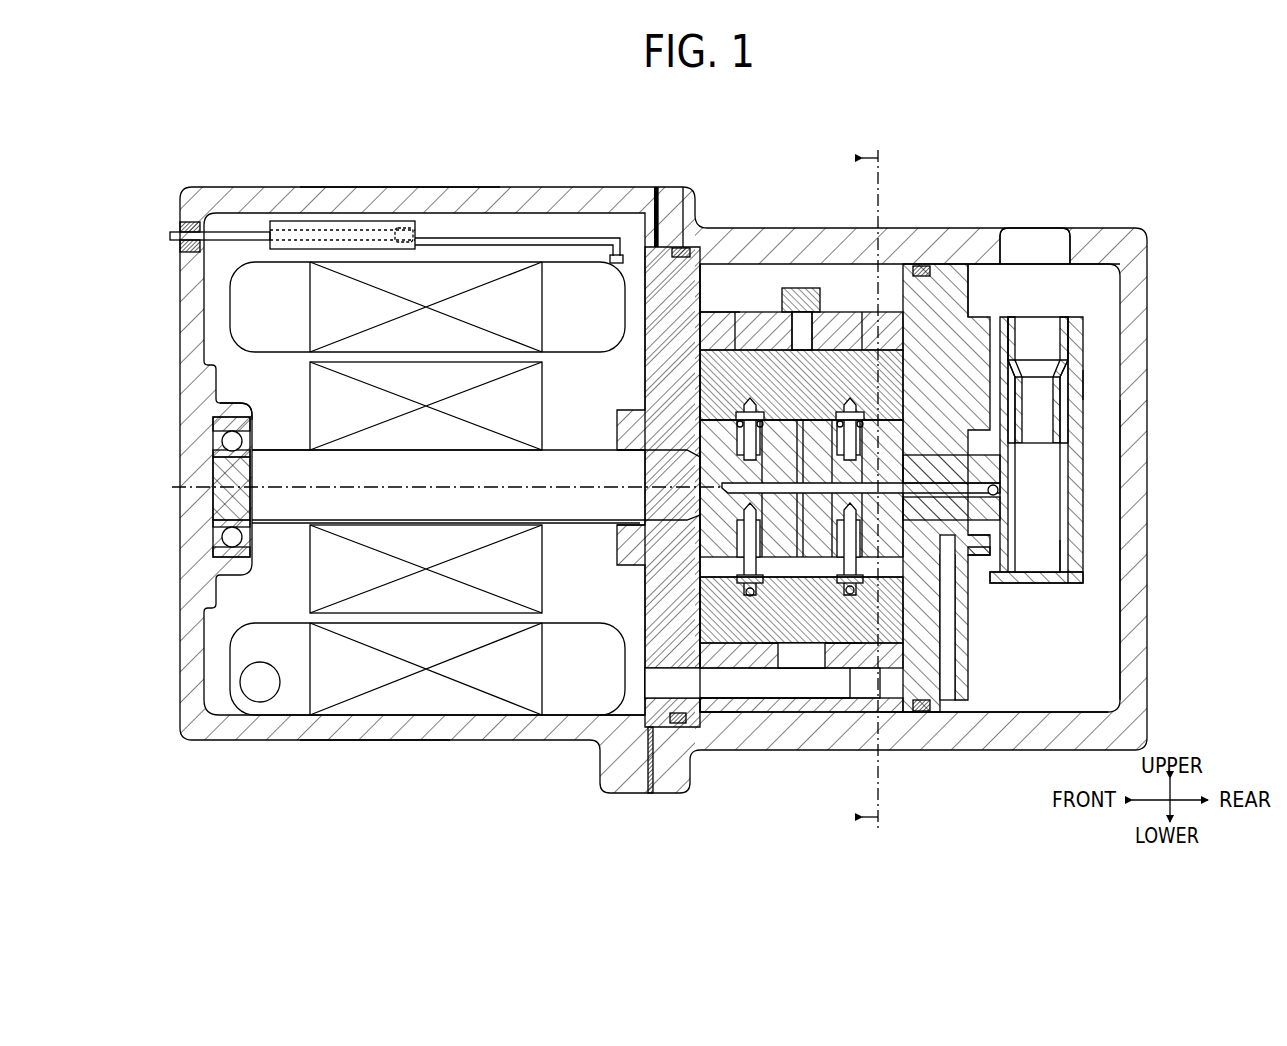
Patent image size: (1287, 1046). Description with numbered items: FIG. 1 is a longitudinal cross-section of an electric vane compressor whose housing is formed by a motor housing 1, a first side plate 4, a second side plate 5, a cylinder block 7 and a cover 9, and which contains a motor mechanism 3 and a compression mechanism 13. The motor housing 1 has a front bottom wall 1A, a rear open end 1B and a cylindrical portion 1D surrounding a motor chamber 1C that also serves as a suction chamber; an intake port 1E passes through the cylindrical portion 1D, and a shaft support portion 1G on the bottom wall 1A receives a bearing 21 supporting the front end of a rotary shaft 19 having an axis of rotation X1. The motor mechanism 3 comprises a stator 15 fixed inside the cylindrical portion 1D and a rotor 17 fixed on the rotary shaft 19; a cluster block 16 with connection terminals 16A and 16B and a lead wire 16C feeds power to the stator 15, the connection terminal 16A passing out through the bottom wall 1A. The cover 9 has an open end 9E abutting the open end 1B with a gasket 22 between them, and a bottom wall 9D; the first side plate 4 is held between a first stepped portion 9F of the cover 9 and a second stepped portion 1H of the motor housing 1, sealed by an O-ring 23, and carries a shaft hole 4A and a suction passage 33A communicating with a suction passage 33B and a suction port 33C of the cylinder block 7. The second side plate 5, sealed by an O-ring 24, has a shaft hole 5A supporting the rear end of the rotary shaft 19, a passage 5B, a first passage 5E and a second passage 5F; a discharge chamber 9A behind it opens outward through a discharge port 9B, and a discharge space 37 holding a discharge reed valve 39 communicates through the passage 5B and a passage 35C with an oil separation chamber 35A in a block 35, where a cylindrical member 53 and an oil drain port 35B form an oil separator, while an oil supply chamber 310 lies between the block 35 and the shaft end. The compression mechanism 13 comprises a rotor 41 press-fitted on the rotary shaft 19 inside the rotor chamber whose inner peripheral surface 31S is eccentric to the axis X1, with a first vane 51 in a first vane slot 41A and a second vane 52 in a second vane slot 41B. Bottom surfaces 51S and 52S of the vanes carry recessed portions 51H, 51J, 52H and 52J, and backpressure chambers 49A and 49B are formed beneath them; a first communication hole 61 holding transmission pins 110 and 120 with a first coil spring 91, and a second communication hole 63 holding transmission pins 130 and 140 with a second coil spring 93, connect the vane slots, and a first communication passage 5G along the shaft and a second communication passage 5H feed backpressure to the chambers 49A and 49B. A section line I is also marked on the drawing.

The motor housing 1 is at (376, 182).
The bottom wall 1A is at (196, 633).
The open end 1B is at (690, 222).
The motor chamber 1C is at (281, 434).
The cylindrical portion 1D is at (382, 742).
The intake port 1E is at (258, 690).
The shaft support portion 1G is at (240, 412).
The second stepped portion 1H is at (622, 703).
The motor mechanism 3 is at (427, 488).
The first side plate 4 is at (640, 386).
The shaft hole 4A is at (625, 452).
The second side plate 5 is at (945, 260).
The shaft hole 5A is at (988, 475).
The passage 5B is at (960, 300).
The first passage 5E is at (952, 670).
The second passage 5F is at (978, 562).
The first communication passage 5G is at (985, 496).
The second communication passage 5H is at (753, 400).
The cylinder block 7 is at (884, 724).
The cover 9 is at (1150, 500).
The discharge chamber 9A is at (1004, 694).
The discharge port 9B is at (1062, 228).
The bottom wall 9D is at (1137, 600).
The open end 9E is at (672, 250).
The first stepped portion 9F is at (680, 728).
The compression mechanism 13 is at (692, 620).
The stator 15 is at (427, 488).
The cluster block 16 is at (305, 222).
The connection terminal 16A is at (235, 232).
The connection terminal 16B is at (403, 228).
The lead wire 16C is at (482, 238).
The rotor 17 is at (426, 487).
The rotary shaft 19 is at (476, 486).
The bearing 21 is at (240, 540).
The gasket 22 is at (656, 200).
The O-ring 23 is at (652, 770).
The O-ring 24 is at (922, 714).
The inner peripheral surface 31S is at (726, 712).
The suction passage 33A is at (660, 684).
The suction passage 33B is at (745, 706).
The suction port 33C is at (810, 692).
The block 35 is at (1085, 456).
The oil separation chamber 35A is at (1037, 507).
The oil drain port 35B is at (1030, 584).
The passage 35C is at (995, 318).
The discharge space 37 is at (817, 295).
The discharge reed valve 39 is at (797, 288).
The rotor 41 is at (714, 470).
The first vane slot 41A is at (700, 406).
The second vane slot 41B is at (700, 548).
The first backpressure chamber 49A is at (1066, 400).
The second backpressure chamber 49B is at (975, 592).
The first vane 51 is at (700, 366).
The recessed portion 51H is at (860, 330).
The recessed portion 51J is at (745, 330).
The bottom surface 51S is at (700, 440).
The second vane 52 is at (700, 600).
The recessed portion 52H is at (852, 650).
The recessed portion 52J is at (770, 650).
The bottom surface 52S is at (700, 577).
The cylindrical member 53 is at (1085, 382).
The first communication hole 61 is at (998, 508).
The second communication hole 63 is at (730, 490).
The first coil spring 91 is at (845, 592).
The second coil spring 93 is at (779, 612).
The first transmission pin 110 is at (856, 400).
The second transmission pin 120 is at (871, 683).
The first transmission pin 130 is at (740, 380).
The second transmission pin 140 is at (775, 685).
The oil supply chamber 310 is at (1058, 548).
The axis of rotation X1 is at (572, 487).
The section line I is at (876, 488).